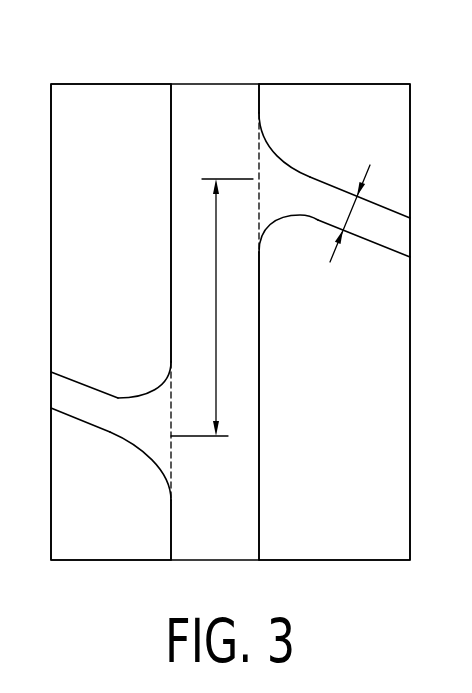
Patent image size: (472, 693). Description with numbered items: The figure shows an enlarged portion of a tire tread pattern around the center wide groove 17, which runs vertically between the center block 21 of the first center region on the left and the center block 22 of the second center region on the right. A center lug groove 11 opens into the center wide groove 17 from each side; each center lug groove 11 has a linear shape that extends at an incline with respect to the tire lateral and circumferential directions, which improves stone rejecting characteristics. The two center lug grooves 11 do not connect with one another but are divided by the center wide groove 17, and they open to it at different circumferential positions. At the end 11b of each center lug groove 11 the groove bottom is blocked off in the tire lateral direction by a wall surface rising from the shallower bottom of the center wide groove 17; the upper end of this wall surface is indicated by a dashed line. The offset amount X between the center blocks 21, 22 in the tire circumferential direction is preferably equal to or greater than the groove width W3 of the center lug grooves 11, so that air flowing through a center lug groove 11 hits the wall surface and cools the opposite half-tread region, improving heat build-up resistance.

The center lug groove 11 is at (62, 372).
The end of the center lug groove 11b is at (168, 436).
The center wide groove 17 is at (218, 98).
The center block 21 is at (92, 190).
The center block 22 is at (328, 383).
The offset amount X is at (212, 307).
The groove width W3 is at (351, 213).